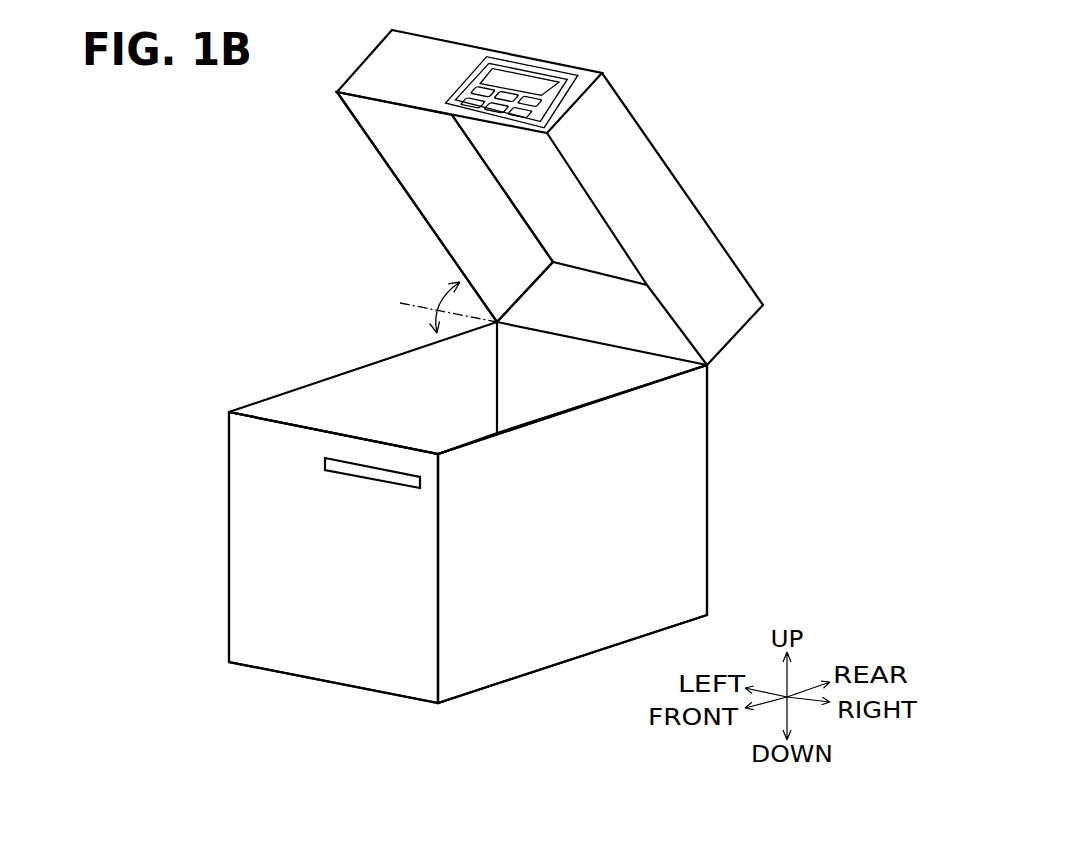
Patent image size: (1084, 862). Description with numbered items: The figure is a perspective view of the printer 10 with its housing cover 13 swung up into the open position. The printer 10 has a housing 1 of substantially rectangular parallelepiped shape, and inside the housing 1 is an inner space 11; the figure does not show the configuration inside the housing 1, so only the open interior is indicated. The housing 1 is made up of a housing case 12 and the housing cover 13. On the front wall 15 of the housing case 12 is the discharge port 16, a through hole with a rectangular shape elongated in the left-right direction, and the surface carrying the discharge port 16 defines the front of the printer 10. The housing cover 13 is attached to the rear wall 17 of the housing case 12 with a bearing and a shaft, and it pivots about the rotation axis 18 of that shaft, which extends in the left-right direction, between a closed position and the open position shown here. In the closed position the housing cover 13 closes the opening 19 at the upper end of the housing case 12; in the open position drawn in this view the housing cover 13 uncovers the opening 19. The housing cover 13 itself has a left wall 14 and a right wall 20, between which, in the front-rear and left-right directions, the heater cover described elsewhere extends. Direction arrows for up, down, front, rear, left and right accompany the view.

The printer 10 is at (745, 227).
The housing 1 is at (791, 376).
The inner space 11 is at (451, 171).
The housing case 12 is at (729, 443).
The housing cover 13 is at (724, 372).
The left wall 14 is at (390, 141).
The front wall 15 is at (238, 550).
The discharge port 16 is at (347, 480).
The rear wall 17 is at (707, 547).
The rotation axis 18 is at (410, 303).
The opening 19 is at (268, 391).
The right wall 20 is at (572, 180).